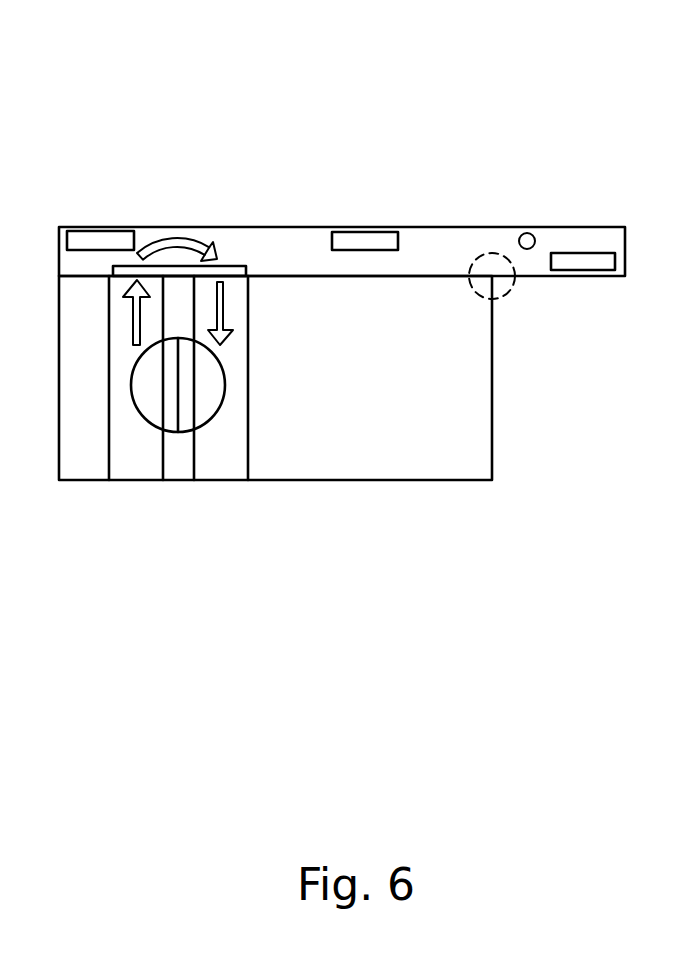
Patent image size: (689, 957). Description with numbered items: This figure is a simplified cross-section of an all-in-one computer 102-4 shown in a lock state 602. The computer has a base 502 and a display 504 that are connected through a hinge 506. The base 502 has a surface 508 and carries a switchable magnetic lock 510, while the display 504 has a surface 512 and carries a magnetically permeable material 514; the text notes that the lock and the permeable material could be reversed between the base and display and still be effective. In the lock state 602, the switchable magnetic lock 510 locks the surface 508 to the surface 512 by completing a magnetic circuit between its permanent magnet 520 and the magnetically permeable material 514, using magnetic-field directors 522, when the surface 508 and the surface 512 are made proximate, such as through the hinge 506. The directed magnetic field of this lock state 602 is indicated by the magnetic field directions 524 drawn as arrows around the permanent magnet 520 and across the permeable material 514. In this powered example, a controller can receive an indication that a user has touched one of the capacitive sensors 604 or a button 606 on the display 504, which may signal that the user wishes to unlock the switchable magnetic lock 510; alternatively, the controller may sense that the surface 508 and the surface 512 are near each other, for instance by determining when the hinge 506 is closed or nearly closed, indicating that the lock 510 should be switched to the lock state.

The all-in-one computer 102-4 is at (507, 58).
The base 502 is at (423, 468).
The display 504 is at (428, 238).
The hinge 506 is at (497, 291).
The surface 508 is at (364, 284).
The switchable magnetic lock 510 is at (144, 458).
The surface 512 is at (334, 267).
The magnetically permeable material 514 is at (235, 270).
The permanent magnet 520 is at (153, 407).
The magnetic-field directors 522 is at (130, 413).
The magnetic field directions 524 is at (182, 245).
The lock state 602 is at (171, 258).
The capacitive sensors 604 is at (100, 243).
The button 606 is at (528, 240).